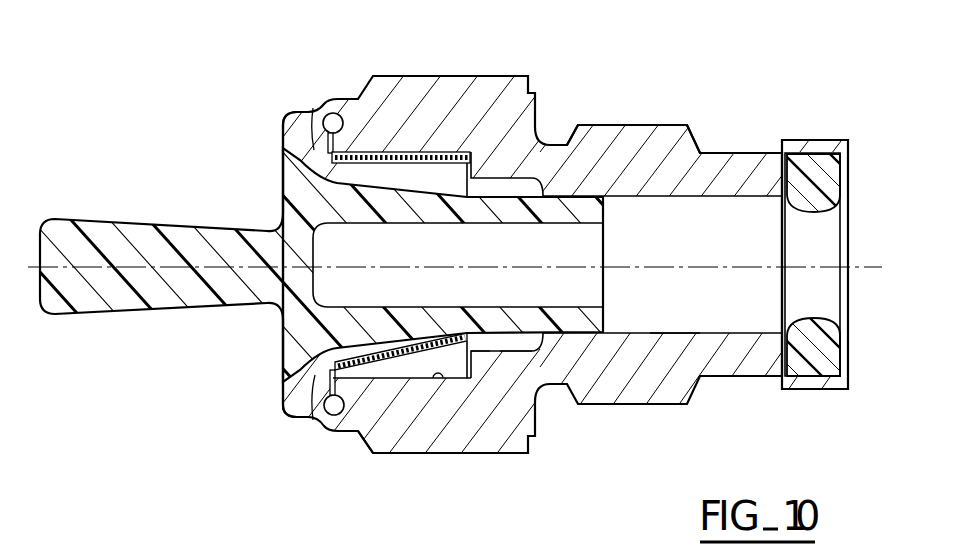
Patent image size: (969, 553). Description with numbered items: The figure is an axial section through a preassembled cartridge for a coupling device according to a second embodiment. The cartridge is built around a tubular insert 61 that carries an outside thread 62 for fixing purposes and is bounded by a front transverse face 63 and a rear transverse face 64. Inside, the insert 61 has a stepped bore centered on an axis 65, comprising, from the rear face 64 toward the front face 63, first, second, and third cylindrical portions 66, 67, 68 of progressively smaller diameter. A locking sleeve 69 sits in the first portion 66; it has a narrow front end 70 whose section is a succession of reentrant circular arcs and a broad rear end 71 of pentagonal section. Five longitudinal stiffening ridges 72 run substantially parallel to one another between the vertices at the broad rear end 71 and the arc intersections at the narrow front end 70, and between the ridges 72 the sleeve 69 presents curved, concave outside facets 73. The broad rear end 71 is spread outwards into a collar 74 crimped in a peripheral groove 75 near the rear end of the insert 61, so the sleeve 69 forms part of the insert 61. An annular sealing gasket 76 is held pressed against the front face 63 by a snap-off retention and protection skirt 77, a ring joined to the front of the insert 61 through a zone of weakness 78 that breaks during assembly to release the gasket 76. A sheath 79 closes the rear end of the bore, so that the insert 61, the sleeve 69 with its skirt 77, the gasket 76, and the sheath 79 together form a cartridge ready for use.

The tubular insert 61 is at (606, 105).
The outside thread 62 is at (657, 127).
The front transverse face 63 is at (800, 348).
The rear transverse face 64 is at (298, 422).
The axis 65 is at (856, 268).
The first cylindrical portion 66 is at (440, 372).
The second cylindrical portion 67 is at (510, 348).
The third cylindrical portion 68 is at (658, 318).
The locking sleeve 69 is at (377, 154).
The narrow front end 70 is at (493, 353).
The broad rear end 71 is at (288, 375).
The longitudinal stiffening ridges 72 is at (427, 160).
The outside facets 73 is at (374, 418).
The collar 74 is at (333, 157).
The peripheral groove 75 is at (325, 114).
The annular sealing gasket 76 is at (842, 182).
The snap-off retention and protection skirt 77 is at (825, 138).
The zone of weakness 78 is at (780, 152).
The sheath 79 is at (278, 395).